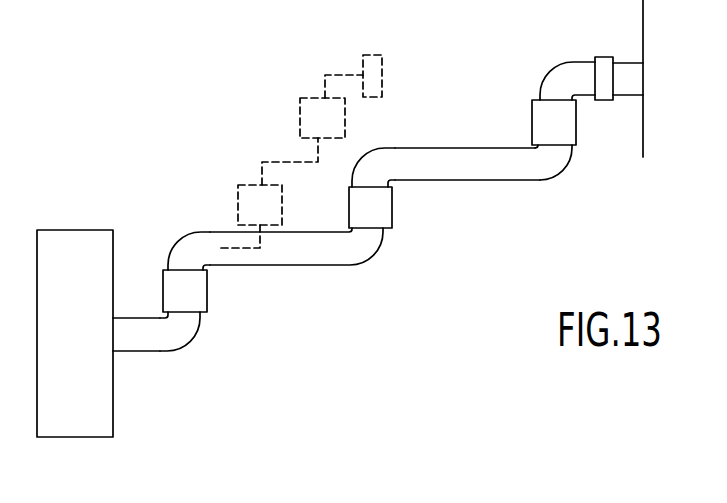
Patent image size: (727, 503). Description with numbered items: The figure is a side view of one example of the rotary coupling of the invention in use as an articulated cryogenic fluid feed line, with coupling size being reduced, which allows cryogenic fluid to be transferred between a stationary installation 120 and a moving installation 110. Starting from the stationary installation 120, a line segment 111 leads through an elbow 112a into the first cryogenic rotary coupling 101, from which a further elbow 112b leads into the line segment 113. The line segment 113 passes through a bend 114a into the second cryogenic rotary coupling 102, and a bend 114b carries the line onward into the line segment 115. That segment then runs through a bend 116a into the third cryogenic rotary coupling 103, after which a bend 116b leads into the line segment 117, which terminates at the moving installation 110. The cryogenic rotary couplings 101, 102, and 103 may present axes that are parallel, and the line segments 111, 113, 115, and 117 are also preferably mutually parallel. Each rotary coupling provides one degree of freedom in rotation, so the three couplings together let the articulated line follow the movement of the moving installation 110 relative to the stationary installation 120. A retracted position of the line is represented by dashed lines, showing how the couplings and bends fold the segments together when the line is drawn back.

The stationary installation 120 is at (87, 247).
The line segment 111 is at (128, 337).
The elbow pipe section 112a is at (187, 323).
The cryogenic rotary coupling 101 is at (192, 290).
The elbow pipe section 112b is at (185, 258).
The line segment 113 is at (290, 253).
The bend 114a is at (377, 232).
The cryogenic rotary coupling 102 is at (380, 212).
The bend 114b is at (368, 168).
The line segment 115 is at (475, 168).
The bend 116a is at (558, 152).
The cryogenic rotary coupling 103 is at (548, 125).
The bend 116b is at (552, 87).
The line segment 117 is at (603, 62).
The moving installation 110 is at (642, 133).